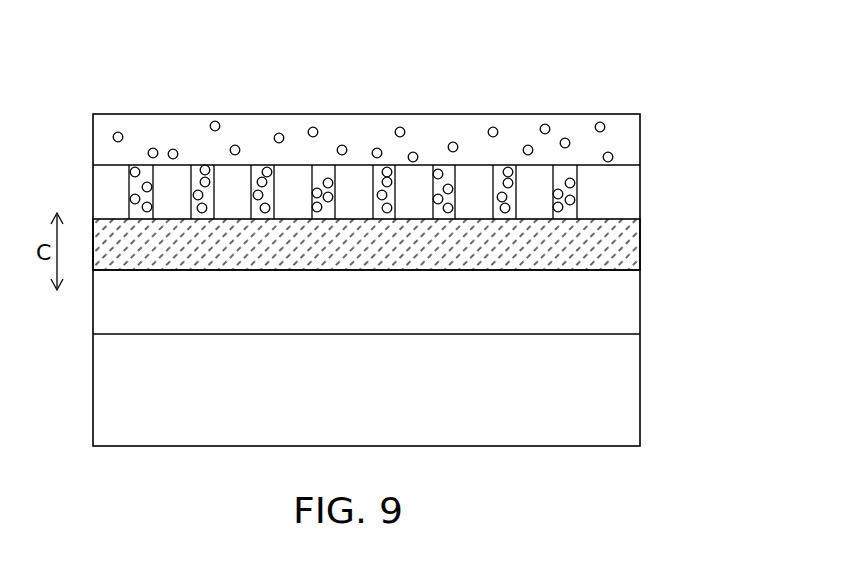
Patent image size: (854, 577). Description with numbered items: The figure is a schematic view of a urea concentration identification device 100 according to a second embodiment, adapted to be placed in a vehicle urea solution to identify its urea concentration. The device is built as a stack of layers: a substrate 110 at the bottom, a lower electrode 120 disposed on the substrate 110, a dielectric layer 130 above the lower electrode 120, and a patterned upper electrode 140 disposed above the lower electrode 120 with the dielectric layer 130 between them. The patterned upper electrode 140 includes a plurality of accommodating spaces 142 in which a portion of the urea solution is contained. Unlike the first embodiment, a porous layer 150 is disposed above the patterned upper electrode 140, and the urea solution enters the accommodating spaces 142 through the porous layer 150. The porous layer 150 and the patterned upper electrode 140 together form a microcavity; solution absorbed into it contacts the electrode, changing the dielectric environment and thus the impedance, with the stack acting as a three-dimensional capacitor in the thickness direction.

The urea concentration identification device 100 is at (608, 74).
The substrate 110 is at (610, 385).
The lower electrode 120 is at (610, 307).
The dielectric layer 130 is at (610, 248).
The patterned upper electrode 140 is at (610, 192).
The accommodating spaces 142 is at (197, 170).
The porous layer 150 is at (610, 140).